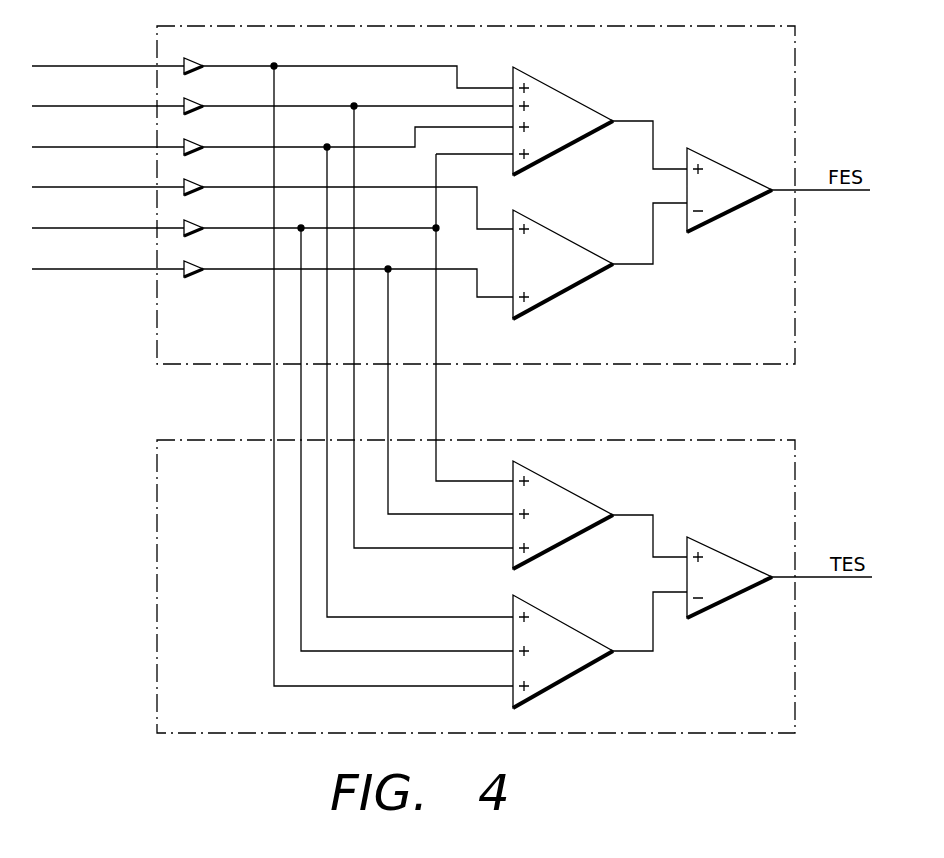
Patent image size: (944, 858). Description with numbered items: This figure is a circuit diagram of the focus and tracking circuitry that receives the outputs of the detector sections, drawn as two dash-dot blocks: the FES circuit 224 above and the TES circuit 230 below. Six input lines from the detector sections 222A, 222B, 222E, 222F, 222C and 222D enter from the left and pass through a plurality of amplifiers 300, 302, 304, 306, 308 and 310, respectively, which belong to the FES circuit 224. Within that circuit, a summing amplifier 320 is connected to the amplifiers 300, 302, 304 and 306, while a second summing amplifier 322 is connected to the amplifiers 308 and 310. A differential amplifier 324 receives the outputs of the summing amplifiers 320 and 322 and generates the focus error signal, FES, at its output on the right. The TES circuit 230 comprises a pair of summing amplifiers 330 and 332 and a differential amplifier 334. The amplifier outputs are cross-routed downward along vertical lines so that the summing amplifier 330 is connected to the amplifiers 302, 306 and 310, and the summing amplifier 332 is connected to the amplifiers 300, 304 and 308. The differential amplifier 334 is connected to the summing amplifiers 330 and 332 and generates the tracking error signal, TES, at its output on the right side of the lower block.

The detector section 222A is at (113, 64).
The detector section 222B is at (113, 104).
The detector section 222E is at (113, 145).
The detector section 222F is at (113, 185).
The detector section 222C is at (113, 226).
The detector section 222D is at (113, 267).
The amplifier 300 is at (192, 62).
The amplifier 302 is at (192, 102).
The amplifier 304 is at (192, 143).
The amplifier 306 is at (192, 183).
The amplifier 308 is at (192, 224).
The amplifier 310 is at (192, 265).
The summing amplifier 320 is at (567, 94).
The summing amplifier 322 is at (565, 240).
The differential amplifier 324 is at (720, 162).
The summing amplifier 330 is at (572, 494).
The summing amplifier 332 is at (566, 624).
The differential amplifier 334 is at (722, 550).
The FES circuit 224 is at (797, 86).
The TES circuit 230 is at (797, 497).